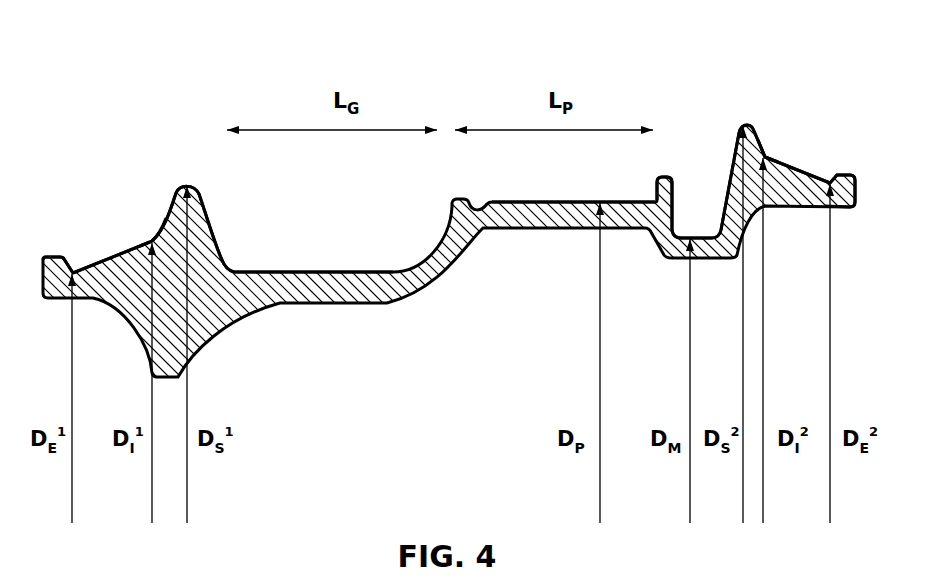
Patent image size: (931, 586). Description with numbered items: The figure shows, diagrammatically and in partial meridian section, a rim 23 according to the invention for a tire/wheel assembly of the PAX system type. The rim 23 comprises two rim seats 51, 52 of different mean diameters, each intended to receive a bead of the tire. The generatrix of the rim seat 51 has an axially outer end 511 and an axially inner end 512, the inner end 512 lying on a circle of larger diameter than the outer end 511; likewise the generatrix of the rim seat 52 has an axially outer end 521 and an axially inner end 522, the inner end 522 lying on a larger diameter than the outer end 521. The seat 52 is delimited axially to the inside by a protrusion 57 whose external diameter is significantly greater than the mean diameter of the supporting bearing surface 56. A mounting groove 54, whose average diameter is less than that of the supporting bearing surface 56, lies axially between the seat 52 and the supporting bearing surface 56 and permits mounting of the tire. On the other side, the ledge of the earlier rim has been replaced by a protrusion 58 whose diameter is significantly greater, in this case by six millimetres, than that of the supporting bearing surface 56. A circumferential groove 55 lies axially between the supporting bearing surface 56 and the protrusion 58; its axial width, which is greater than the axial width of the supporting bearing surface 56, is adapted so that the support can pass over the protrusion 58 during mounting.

The rim 23 is at (568, 224).
The rim seat 51 is at (115, 256).
The axially outer end 511 is at (77, 266).
The axially inner end 512 is at (147, 241).
The rim seat 52 is at (798, 167).
The axially outer end 521 is at (828, 180).
The axially inner end 522 is at (766, 156).
The mounting groove 54 is at (701, 200).
The circumferential groove 55 is at (308, 250).
The supporting bearing surface 56 is at (540, 203).
The protrusion 57 is at (747, 125).
The protrusion 58 is at (198, 187).